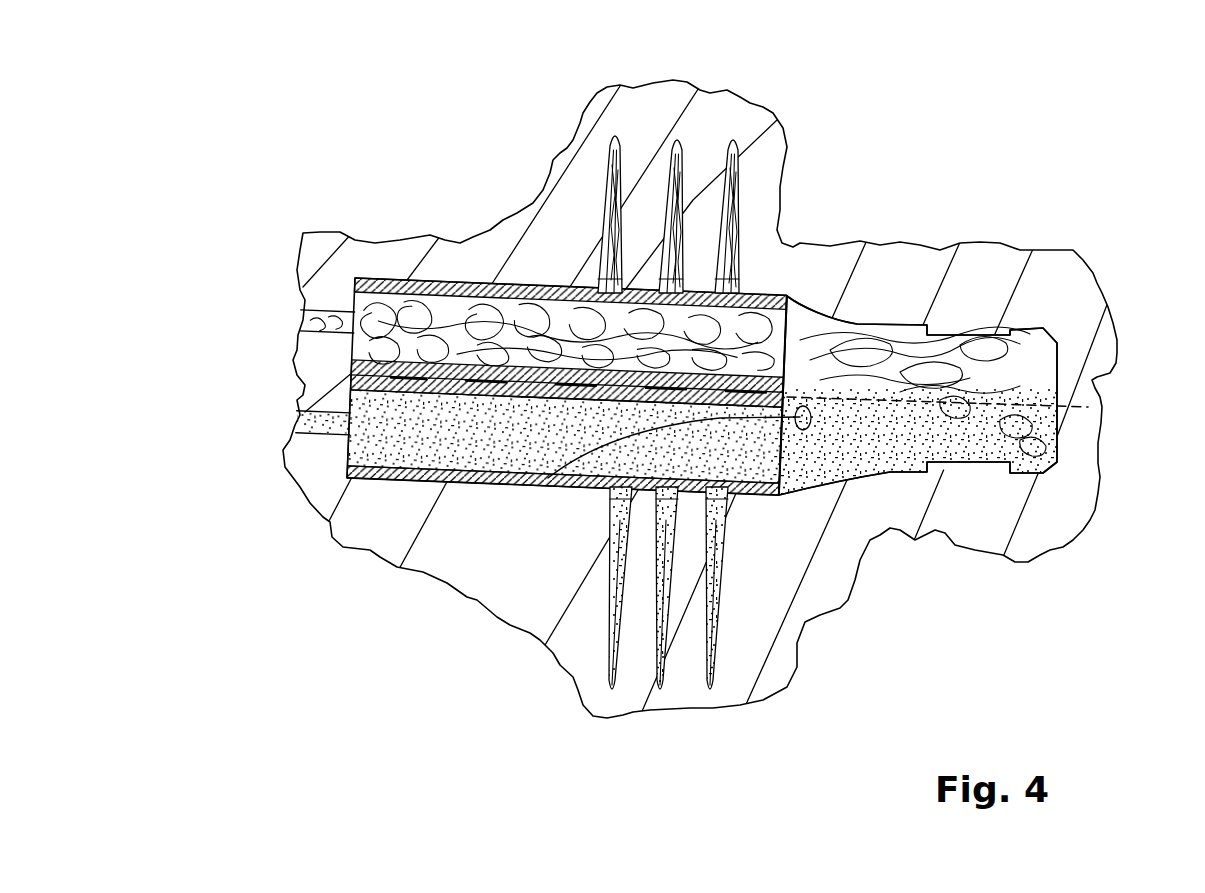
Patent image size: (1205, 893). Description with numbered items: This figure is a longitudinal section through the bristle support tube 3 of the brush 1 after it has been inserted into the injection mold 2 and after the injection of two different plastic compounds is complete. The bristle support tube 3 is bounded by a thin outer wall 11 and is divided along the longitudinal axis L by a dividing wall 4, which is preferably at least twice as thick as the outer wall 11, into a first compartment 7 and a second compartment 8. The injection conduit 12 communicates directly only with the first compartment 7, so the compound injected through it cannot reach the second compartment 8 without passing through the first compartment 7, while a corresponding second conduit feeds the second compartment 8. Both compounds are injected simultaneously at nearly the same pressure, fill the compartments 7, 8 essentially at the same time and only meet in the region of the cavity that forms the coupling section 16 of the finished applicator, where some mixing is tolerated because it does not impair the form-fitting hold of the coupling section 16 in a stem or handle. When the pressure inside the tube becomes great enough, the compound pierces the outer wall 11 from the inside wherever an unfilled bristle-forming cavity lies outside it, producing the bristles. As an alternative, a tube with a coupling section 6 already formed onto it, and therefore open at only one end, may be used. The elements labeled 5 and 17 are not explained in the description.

The brush 1 is at (790, 268).
The injection mold 2 is at (661, 102).
The bristle support tube 3 is at (410, 330).
The dividing wall 4 is at (460, 378).
The upper needles 5 is at (672, 165).
The coupling section 6 is at (660, 655).
The first compartment 7 is at (367, 307).
The second compartment 8 is at (367, 445).
The outer wall 11 is at (440, 482).
The injection conduit 12 is at (353, 317).
The coupling section 16 is at (955, 352).
The separating membrane 17 is at (594, 393).
The longitudinal axis L is at (1073, 408).